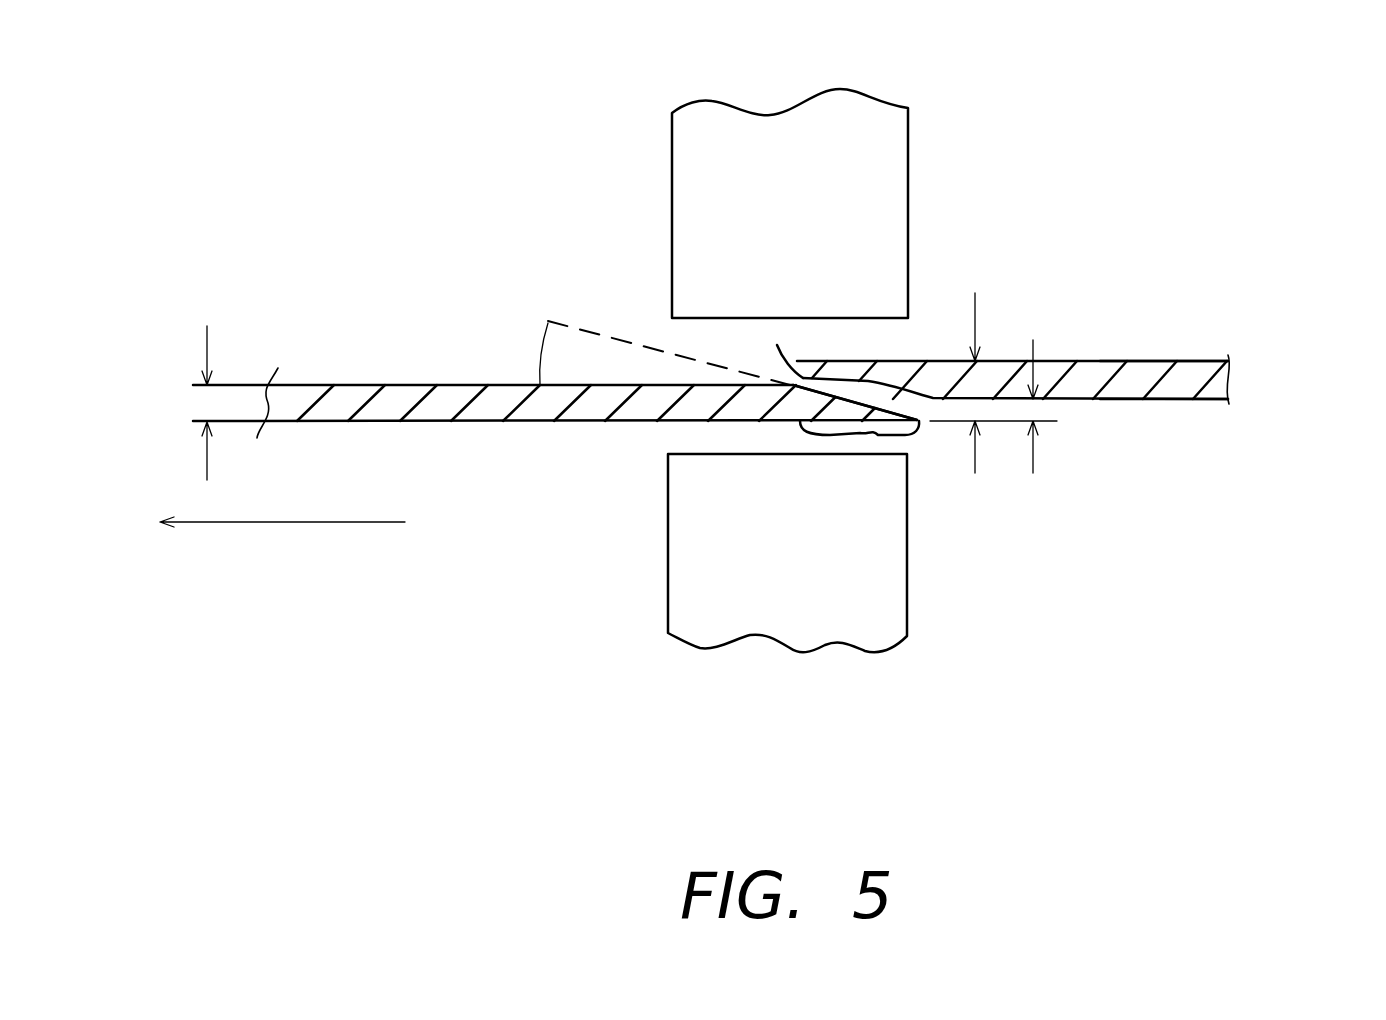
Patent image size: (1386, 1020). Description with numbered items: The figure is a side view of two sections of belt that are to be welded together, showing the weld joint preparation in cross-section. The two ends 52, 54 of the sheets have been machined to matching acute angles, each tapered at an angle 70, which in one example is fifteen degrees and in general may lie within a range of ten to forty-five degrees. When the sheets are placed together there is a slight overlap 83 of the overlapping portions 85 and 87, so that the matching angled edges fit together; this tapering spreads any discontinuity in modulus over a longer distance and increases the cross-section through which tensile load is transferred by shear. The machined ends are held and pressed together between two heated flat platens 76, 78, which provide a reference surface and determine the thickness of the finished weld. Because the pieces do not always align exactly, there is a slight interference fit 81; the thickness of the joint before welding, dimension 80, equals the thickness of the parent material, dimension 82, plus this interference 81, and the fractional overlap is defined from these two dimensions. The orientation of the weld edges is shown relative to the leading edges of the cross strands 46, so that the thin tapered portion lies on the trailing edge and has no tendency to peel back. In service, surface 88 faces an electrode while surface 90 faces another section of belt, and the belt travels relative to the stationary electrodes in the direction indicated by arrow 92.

The cross strands 46 is at (785, 397).
The first sheet end 52 is at (437, 419).
The second sheet end 54 is at (1230, 397).
The taper angle 70 is at (548, 318).
The first flat platen 76 is at (893, 100).
The second flat platen 78 is at (907, 633).
The joint thickness before welding 80 is at (977, 320).
The interference fit 81 is at (1035, 475).
The parent material thickness 82 is at (205, 403).
The overlap 83 is at (921, 421).
The first overlapping portion 85 is at (790, 382).
The second overlapping portion 87 is at (800, 347).
The electrode-facing surface 88 is at (1165, 397).
The belt-facing surface 90 is at (1138, 358).
The direction of travel arrow 92 is at (283, 520).